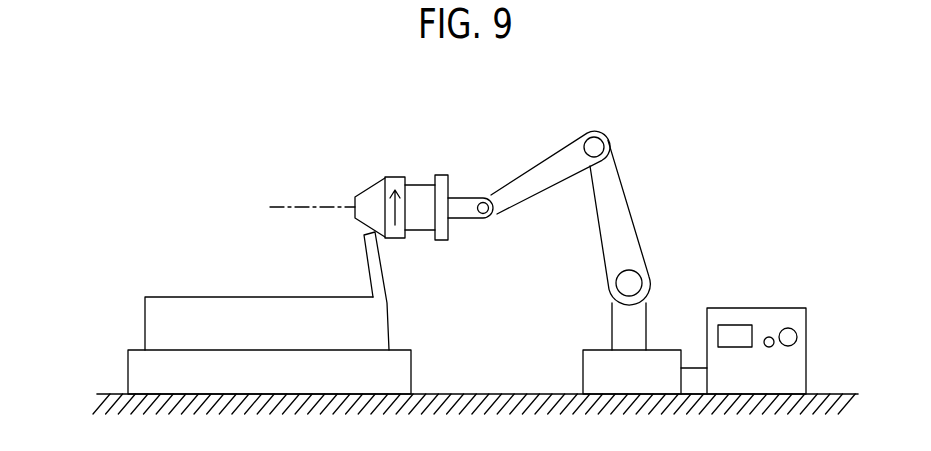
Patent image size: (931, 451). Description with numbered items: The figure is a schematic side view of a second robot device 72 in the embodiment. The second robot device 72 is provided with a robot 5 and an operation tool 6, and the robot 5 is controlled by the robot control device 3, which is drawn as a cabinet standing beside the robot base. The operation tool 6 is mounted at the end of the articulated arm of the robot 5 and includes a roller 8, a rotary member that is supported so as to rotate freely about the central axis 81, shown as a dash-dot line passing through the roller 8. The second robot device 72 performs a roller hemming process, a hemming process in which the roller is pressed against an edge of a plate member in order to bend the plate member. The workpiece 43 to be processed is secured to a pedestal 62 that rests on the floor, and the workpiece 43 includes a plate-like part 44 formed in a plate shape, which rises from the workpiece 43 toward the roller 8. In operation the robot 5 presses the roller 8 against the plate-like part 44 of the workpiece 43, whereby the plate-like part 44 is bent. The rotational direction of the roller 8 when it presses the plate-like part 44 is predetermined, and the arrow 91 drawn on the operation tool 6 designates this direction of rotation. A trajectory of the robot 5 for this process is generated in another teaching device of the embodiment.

The robot control device 3 is at (770, 308).
The robot 5 is at (618, 204).
The operation tool 6 is at (432, 183).
The roller 8 is at (373, 198).
The workpiece 43 is at (160, 310).
The plate-like part 44 is at (373, 270).
The pedestal 62 is at (150, 368).
The second robot device 72 is at (616, 121).
The central axis 81 is at (296, 207).
The arrow 91 is at (411, 208).